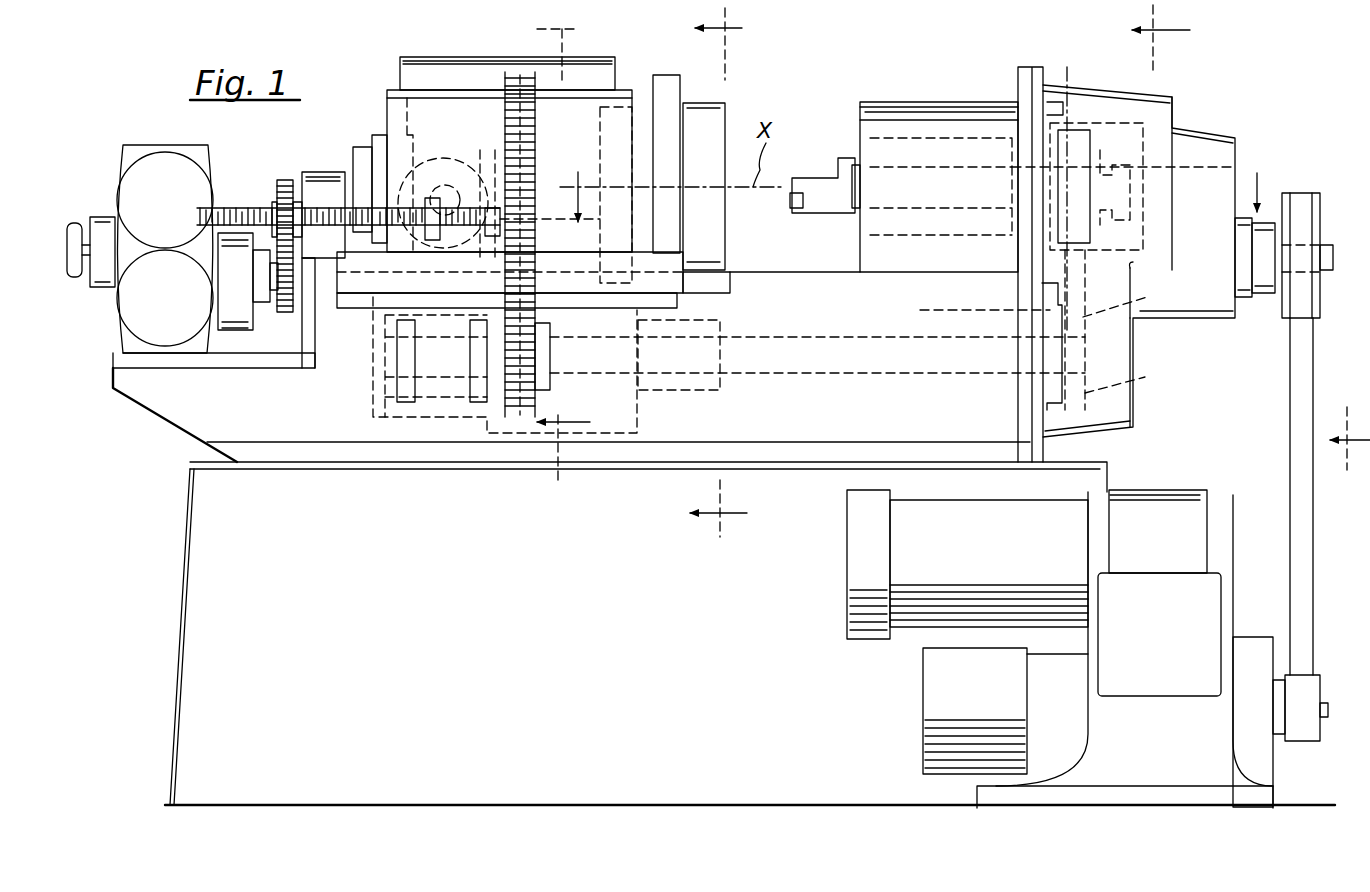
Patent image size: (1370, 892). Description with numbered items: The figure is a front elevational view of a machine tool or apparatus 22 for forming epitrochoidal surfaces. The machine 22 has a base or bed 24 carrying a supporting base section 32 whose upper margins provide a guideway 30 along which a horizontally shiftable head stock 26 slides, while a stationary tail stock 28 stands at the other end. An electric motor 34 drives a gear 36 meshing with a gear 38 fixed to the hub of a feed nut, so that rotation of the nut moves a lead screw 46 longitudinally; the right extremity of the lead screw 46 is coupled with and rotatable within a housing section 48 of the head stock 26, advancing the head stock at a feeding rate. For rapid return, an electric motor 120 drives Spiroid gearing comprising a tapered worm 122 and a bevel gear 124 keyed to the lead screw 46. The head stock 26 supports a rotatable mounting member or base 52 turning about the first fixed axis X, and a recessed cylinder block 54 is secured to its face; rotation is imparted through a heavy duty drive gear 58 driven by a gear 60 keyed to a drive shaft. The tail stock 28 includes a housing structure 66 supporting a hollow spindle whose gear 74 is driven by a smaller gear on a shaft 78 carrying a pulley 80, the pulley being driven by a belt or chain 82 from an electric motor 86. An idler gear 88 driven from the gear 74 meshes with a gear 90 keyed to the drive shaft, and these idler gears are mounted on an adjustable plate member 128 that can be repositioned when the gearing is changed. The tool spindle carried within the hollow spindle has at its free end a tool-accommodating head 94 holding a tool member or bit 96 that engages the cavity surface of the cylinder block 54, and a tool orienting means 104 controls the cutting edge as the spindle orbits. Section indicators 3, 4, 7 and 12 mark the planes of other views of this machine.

The base or bed 24 is at (488, 632).
The supporting base section 32 is at (687, 423).
The electric motor 34 is at (212, 150).
The gear 38 is at (284, 190).
The lead screw 46 is at (240, 215).
The gear 36 is at (292, 305).
The head stock 26 is at (434, 55).
The housing section 48 is at (468, 160).
The tapered Spiroid worm 122 is at (442, 191).
The bevel gear 124 is at (422, 243).
The electric motor 120 is at (448, 250).
The drive gear 58 is at (505, 85).
The rotatable mounting member or base 52 is at (668, 78).
The cylinder block 54 is at (705, 240).
The guideway 30 is at (677, 295).
The tool-accommodating fixture or head 94 is at (818, 192).
The tool member or bit 96 is at (790, 200).
The machine tool or apparatus 22 is at (920, 92).
The housing structure 66 is at (973, 107).
The gear 74 is at (1070, 130).
The tail stock 28 is at (1088, 85).
The tool orienting means 104 is at (1163, 122).
The idler gear 88 is at (1131, 293).
The gear 90 is at (1130, 372).
The adjustable plate member 128 is at (817, 335).
The pulley 80 is at (1320, 193).
The shaft 78 is at (1330, 270).
The belt or chain 82 is at (1295, 378).
The gear 60 is at (507, 423).
The electric motor 86 is at (940, 703).
The section line 12 is at (585, 503).
The section line 4 is at (728, 272).
The section line 7 is at (910, 183).
The section line 3 is at (1251, 241).